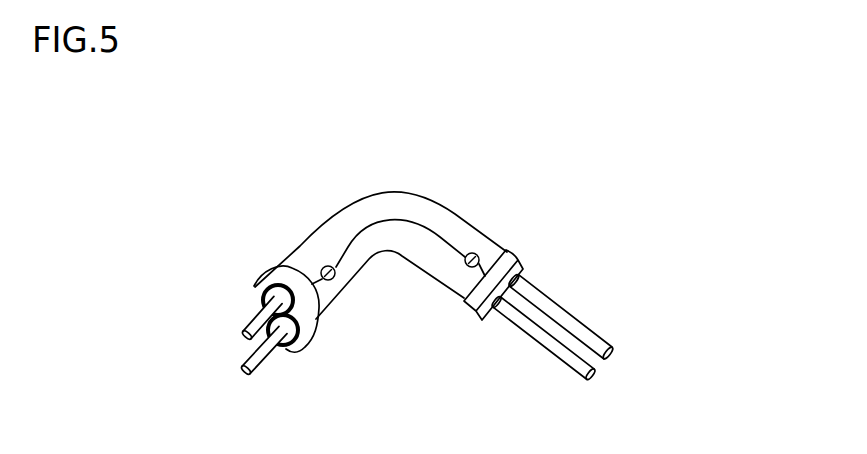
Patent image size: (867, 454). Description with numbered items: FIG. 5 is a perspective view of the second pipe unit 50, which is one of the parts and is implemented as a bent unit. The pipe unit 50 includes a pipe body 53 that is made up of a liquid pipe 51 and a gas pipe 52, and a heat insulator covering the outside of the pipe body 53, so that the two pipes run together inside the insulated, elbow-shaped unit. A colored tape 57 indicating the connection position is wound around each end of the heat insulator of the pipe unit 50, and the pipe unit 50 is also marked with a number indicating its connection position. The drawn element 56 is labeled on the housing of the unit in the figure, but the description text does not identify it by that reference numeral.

The pipe unit 50 is at (459, 165).
The liquid pipe 51 is at (597, 338).
The gas pipe 52 is at (268, 352).
The pipe body 53 is at (241, 332).
The housing 56 is at (366, 203).
The colored tape 57 is at (296, 271).